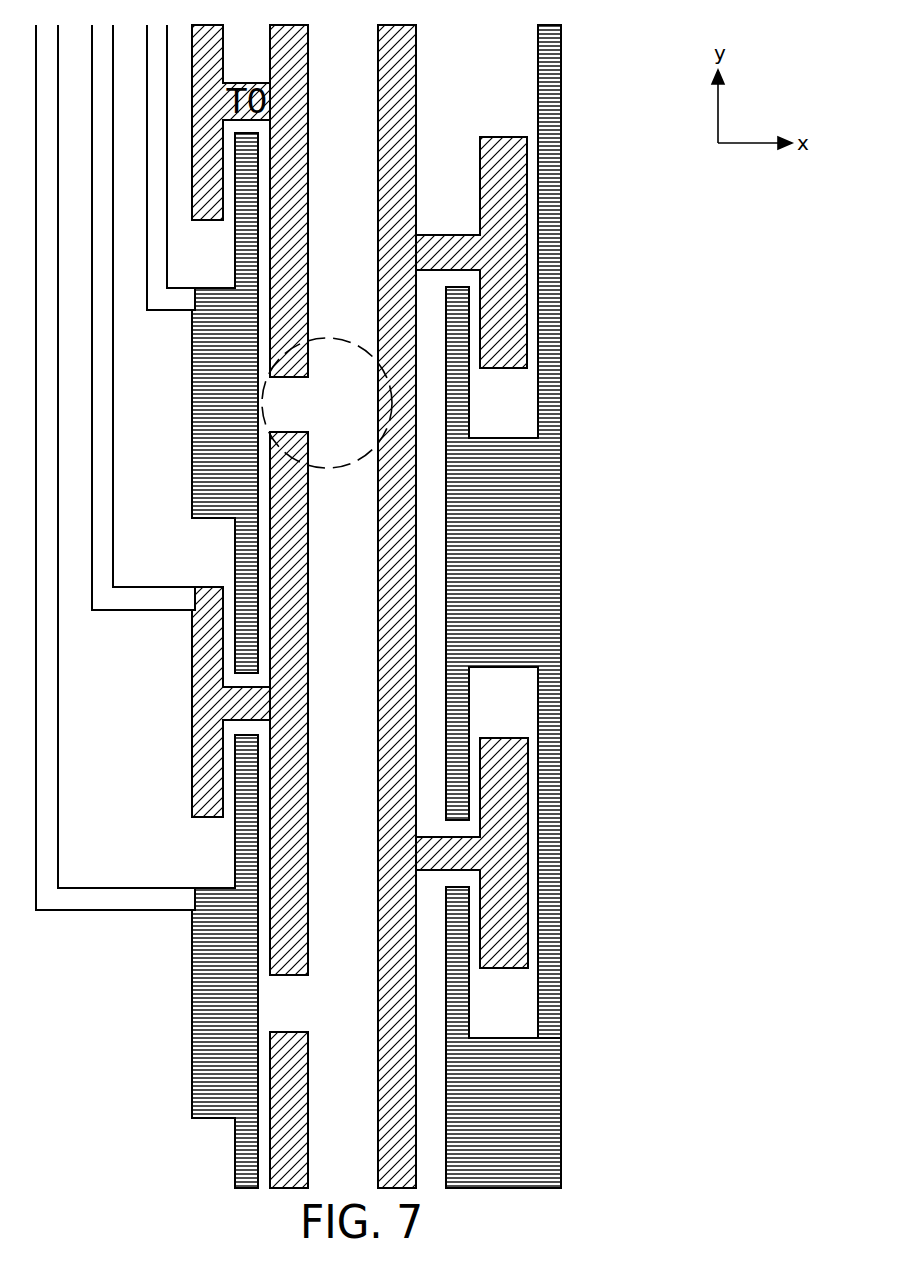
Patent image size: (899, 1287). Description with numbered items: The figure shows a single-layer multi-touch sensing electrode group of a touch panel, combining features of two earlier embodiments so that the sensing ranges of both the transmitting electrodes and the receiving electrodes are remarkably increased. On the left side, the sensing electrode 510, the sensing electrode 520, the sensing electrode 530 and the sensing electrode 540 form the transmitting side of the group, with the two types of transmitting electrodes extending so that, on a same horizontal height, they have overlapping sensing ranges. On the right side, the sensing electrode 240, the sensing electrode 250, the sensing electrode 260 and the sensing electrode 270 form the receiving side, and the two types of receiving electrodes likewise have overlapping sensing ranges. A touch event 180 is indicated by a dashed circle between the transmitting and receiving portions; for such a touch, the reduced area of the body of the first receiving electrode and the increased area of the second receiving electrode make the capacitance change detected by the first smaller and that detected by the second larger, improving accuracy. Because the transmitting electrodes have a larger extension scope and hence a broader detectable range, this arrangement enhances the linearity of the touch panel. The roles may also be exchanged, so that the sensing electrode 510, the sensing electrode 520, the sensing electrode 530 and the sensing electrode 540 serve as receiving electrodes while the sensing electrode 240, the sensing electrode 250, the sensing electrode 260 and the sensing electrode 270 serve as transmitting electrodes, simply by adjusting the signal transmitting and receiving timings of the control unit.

The touch event 180 is at (328, 338).
The sensing electrode 240 is at (505, 137).
The sensing electrode 250 is at (557, 479).
The sensing electrode 260 is at (525, 763).
The sensing electrode 270 is at (557, 1077).
The sensing electrode 510 is at (303, 168).
The sensing electrode 520 is at (196, 474).
The sensing electrode 530 is at (197, 789).
The sensing electrode 540 is at (197, 1097).